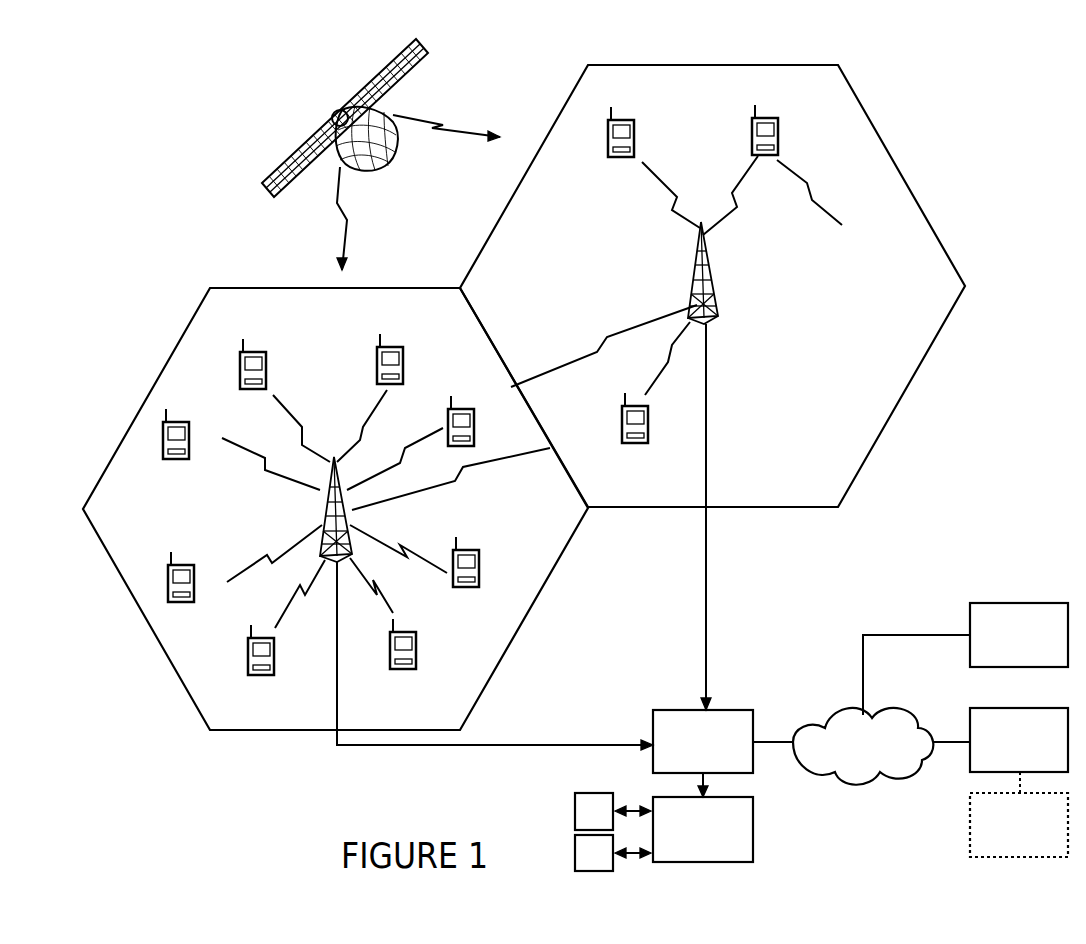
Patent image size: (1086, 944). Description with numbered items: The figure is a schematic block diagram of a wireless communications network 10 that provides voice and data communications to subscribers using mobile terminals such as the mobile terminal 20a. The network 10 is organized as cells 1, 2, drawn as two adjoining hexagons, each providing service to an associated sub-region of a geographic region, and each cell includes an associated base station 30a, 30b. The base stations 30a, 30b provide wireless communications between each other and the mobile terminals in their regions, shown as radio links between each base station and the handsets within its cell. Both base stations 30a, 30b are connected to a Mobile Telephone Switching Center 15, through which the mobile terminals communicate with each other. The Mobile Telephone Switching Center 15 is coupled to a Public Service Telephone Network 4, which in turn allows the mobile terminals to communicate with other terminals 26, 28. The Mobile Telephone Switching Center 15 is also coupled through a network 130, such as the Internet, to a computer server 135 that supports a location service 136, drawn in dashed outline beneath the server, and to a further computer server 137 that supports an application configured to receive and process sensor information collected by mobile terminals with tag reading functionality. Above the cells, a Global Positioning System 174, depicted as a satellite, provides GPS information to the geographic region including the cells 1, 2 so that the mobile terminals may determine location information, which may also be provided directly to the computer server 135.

The cell 1 is at (920, 368).
The cell 2 is at (178, 683).
The Public Service Telephone Network 4 is at (697, 854).
The wireless communications network 10 is at (1006, 147).
The Mobile Telephone Switching Center 15 is at (691, 768).
The mobile terminal 20a is at (650, 123).
The terminal 26 is at (582, 865).
The terminal 28 is at (582, 823).
The base station 30a is at (690, 287).
The base station 30b is at (326, 520).
The network 130 is at (845, 753).
The computer server 135 is at (1000, 751).
The location service 136 is at (1000, 836).
The computer server 137 is at (1000, 646).
The Global Positioning System 174 is at (345, 112).